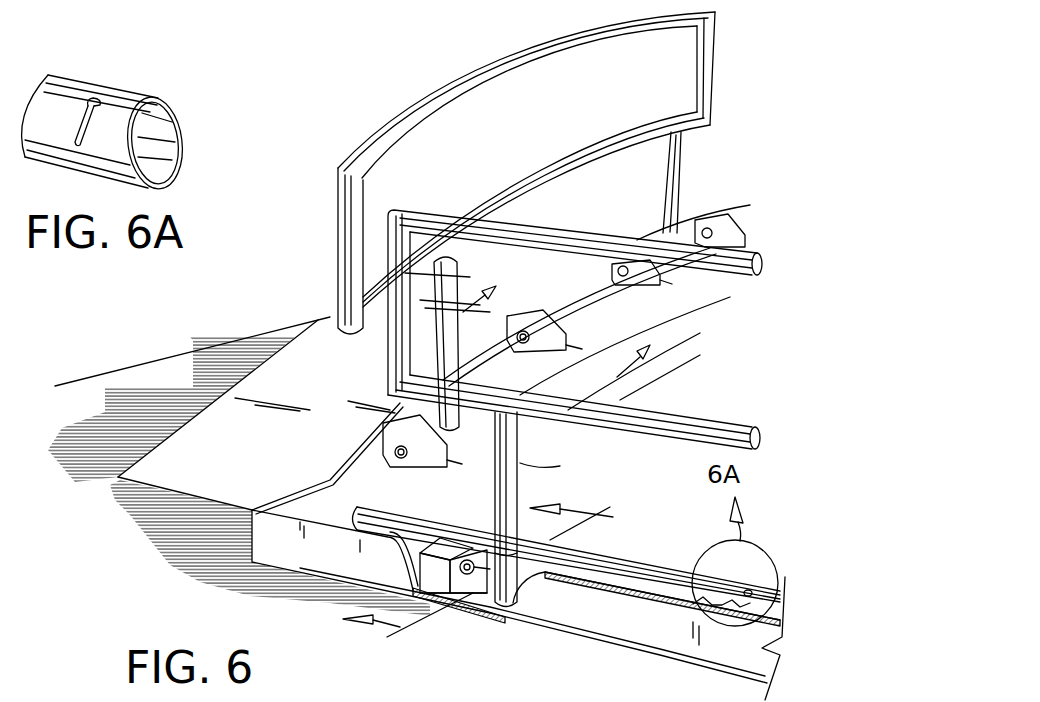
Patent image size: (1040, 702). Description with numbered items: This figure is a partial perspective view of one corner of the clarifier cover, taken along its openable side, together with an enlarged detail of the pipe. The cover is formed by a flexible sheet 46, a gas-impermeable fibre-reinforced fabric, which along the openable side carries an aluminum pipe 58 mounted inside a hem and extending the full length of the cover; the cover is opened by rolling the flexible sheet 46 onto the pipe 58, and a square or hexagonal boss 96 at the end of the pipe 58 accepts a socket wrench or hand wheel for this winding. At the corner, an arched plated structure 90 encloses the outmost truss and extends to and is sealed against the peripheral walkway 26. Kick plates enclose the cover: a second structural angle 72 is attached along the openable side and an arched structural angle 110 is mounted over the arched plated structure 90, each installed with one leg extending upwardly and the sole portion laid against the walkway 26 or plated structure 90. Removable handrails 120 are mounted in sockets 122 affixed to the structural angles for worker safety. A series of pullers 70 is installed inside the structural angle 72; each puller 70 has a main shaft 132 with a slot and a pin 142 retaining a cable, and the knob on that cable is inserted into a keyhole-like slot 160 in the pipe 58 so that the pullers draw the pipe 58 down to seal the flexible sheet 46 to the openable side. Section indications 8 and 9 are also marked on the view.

In FIG. 6, the peripheral walkway 26 is at (163, 380).
In FIG. 6, the flexible sheet 46 is at (737, 401).
In FIG. 6A, the pipe 58 is at (87, 77).
In FIG. 6, the pipe 58 is at (623, 560).
In FIG. 6, the puller 70 is at (460, 593).
In FIG. 6, the second structural angle 72 is at (265, 537).
In FIG. 6, the arched plated structure 90 is at (317, 320).
In FIG. 6, the boss 96 is at (353, 500).
In FIG. 6, the arched structural angle 110 is at (355, 465).
In FIG. 6, the handrail 120 is at (383, 137).
In FIG. 6, the socket 122 is at (700, 232).
In FIG. 6, the main shaft 132 is at (491, 634).
In FIG. 6, the pin 142 is at (437, 647).
In FIG. 6A, the keyhole-like slot 160 is at (115, 93).
In FIG. 6, the keyhole-like slot 160 is at (520, 467).
In FIG. 6, the section line 8- 8 is at (469, 560).
In FIG. 6, the section line 9- 9 is at (567, 328).